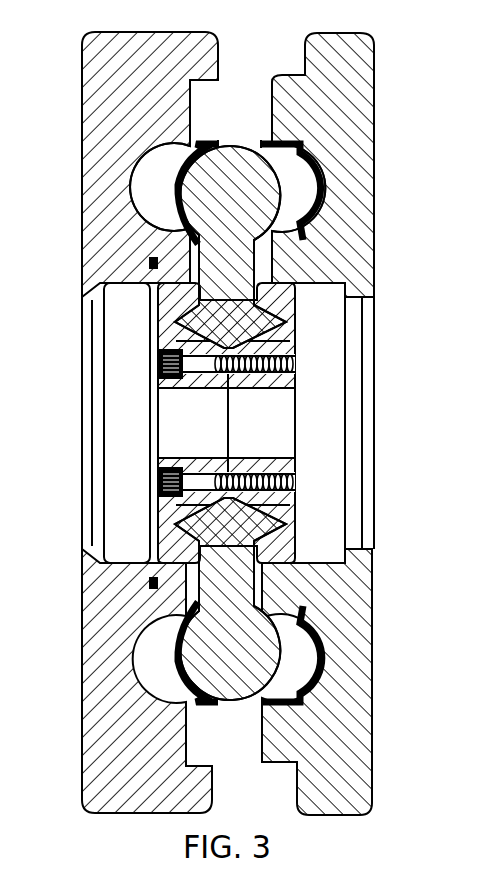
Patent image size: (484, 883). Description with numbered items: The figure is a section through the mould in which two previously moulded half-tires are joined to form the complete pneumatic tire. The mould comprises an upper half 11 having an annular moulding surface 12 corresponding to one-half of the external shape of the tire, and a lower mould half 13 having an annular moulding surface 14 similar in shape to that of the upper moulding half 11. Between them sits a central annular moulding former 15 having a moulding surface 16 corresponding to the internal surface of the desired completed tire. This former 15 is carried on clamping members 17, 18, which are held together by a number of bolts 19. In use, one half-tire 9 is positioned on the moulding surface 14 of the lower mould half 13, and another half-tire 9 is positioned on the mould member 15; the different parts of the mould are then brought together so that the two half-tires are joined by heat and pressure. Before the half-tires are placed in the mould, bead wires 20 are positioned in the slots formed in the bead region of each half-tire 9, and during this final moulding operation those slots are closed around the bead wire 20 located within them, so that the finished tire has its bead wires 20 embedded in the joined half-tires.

The half-tire 9 is at (288, 133).
The upper half 11 is at (105, 170).
The annular moulding surface 12 is at (148, 148).
The lower mould half 13 is at (356, 116).
The annular moulding surface 14 is at (327, 170).
The central annular moulding former 15 is at (222, 187).
The moulding surface 16 is at (322, 190).
The clamping member 17 is at (284, 333).
The clamping member 18 is at (172, 342).
The bolt 19 is at (168, 378).
The bead wire 20 is at (163, 245).